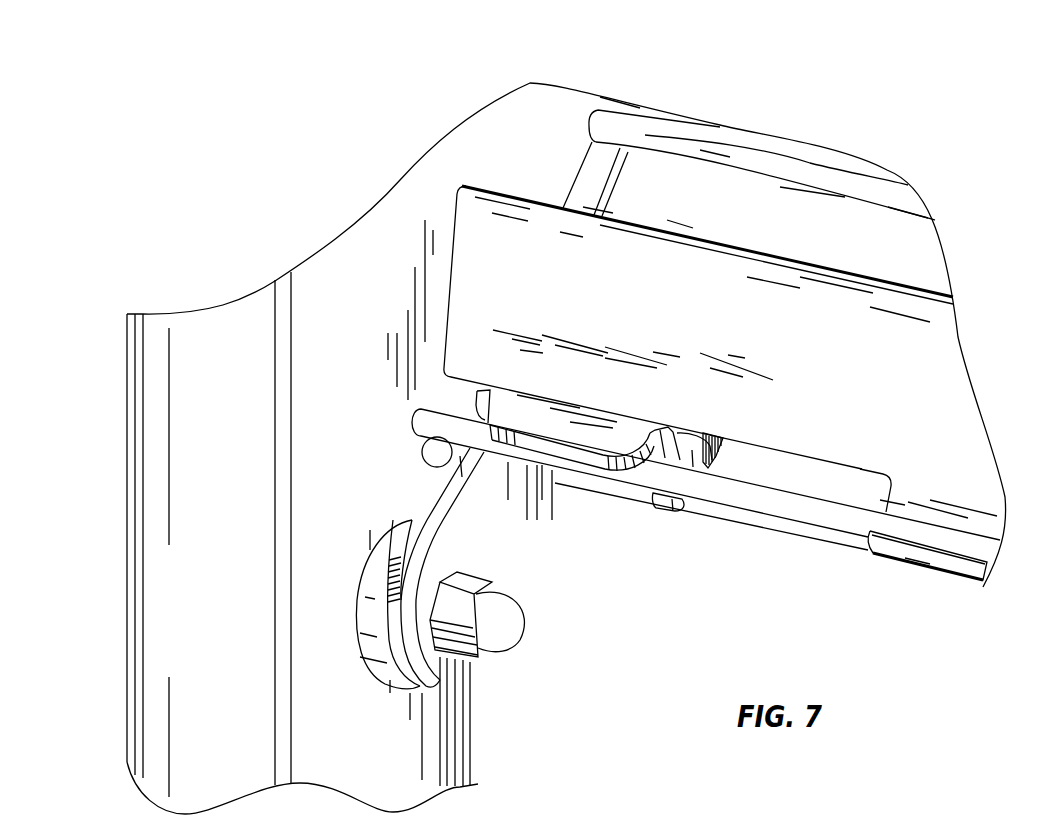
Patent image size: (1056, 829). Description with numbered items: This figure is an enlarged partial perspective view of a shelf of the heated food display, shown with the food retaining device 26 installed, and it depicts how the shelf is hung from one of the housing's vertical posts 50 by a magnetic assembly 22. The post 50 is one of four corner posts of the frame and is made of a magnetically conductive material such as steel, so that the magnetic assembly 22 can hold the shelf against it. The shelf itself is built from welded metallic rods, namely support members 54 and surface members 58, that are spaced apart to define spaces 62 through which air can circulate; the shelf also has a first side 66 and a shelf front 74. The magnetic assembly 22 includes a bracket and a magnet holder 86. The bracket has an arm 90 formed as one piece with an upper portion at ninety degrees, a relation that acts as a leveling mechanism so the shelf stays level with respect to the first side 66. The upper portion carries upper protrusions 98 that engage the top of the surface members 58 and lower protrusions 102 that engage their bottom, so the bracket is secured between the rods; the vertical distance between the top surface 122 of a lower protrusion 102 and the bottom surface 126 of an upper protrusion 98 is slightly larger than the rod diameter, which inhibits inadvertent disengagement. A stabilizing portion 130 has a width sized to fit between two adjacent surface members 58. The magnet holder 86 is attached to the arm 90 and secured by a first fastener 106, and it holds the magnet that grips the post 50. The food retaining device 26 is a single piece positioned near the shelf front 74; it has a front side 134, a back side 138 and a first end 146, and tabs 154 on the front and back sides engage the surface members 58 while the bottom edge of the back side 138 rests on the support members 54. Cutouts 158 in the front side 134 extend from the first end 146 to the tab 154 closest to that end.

The magnetic assembly 22 is at (645, 617).
The food retaining device 26 is at (900, 358).
The vertical post 50 is at (168, 600).
The support member 54 is at (590, 165).
The surface member 58 is at (627, 127).
The space 62 is at (738, 212).
The first side 66 is at (567, 186).
The shelf front 74 is at (816, 528).
The magnet holder 86 is at (367, 647).
The arm 90 is at (417, 650).
The upper protrusion 98 is at (605, 437).
The lower protrusion 102 is at (672, 502).
The first fastener 106 is at (512, 620).
The top surface 122 is at (645, 491).
The bottom surface 126 is at (630, 477).
The stabilizing portion 130 is at (712, 455).
The front side 134 is at (919, 425).
The back side 138 is at (890, 280).
The first end 146 is at (452, 268).
The tab 154 is at (938, 557).
The cutout 158 is at (843, 477).